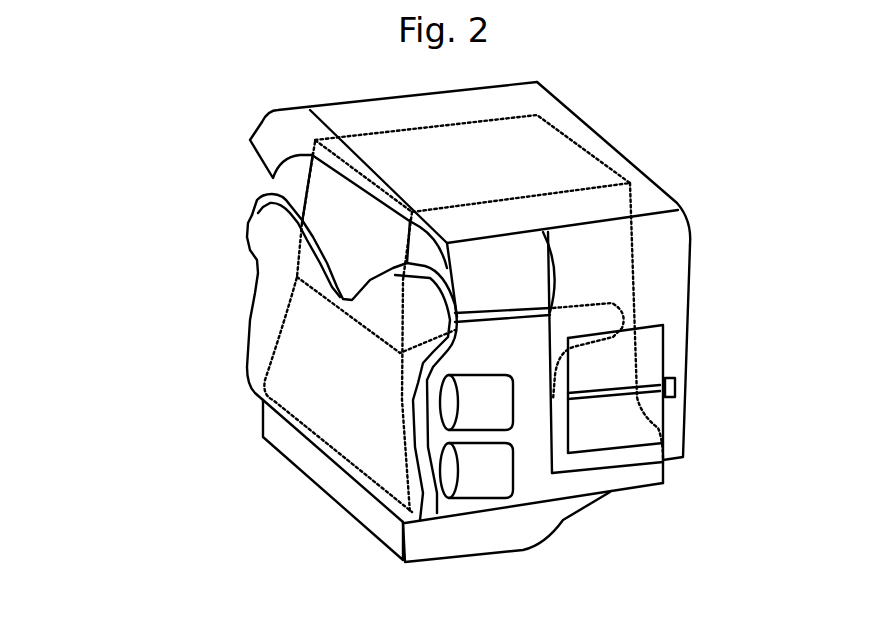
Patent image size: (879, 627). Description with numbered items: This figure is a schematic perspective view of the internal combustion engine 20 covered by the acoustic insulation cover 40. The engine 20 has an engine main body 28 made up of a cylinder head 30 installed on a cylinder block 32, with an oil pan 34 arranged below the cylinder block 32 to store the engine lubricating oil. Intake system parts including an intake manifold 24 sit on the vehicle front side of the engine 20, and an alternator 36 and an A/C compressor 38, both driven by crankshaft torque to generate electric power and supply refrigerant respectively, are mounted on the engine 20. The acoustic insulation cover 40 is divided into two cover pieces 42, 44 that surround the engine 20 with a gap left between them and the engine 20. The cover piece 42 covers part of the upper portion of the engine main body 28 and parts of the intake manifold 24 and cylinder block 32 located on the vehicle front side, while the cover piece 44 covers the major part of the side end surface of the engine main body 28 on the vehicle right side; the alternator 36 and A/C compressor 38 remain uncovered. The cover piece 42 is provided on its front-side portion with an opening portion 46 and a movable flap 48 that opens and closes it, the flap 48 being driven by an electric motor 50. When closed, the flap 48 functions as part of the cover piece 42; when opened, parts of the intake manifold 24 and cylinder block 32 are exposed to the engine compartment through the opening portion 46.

The internal combustion engine 20 is at (298, 189).
The intake manifold 24 is at (508, 360).
The engine main body 28 is at (127, 200).
The cylinder head 30 is at (350, 257).
The cylinder block 32 is at (397, 353).
The oil pan 34 is at (303, 451).
The alternator 36 is at (477, 407).
The A/C compressor 38 is at (483, 473).
The acoustic insulation cover 40 is at (631, 126).
The cover piece 42 is at (660, 247).
The cover piece 44 is at (262, 327).
The opening portion 46 is at (665, 356).
The flap 48 is at (623, 422).
The electric motor 50 is at (680, 393).